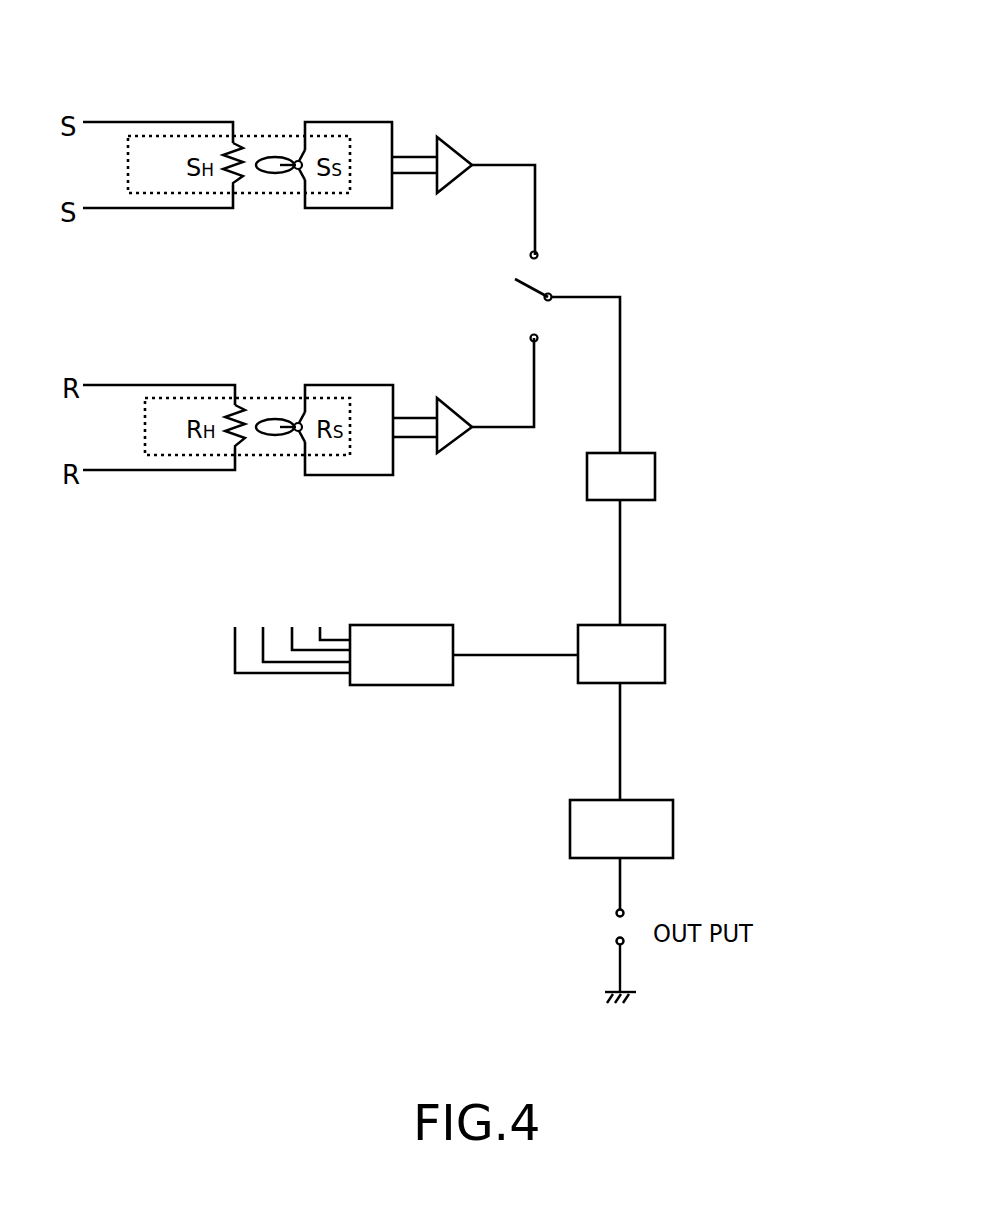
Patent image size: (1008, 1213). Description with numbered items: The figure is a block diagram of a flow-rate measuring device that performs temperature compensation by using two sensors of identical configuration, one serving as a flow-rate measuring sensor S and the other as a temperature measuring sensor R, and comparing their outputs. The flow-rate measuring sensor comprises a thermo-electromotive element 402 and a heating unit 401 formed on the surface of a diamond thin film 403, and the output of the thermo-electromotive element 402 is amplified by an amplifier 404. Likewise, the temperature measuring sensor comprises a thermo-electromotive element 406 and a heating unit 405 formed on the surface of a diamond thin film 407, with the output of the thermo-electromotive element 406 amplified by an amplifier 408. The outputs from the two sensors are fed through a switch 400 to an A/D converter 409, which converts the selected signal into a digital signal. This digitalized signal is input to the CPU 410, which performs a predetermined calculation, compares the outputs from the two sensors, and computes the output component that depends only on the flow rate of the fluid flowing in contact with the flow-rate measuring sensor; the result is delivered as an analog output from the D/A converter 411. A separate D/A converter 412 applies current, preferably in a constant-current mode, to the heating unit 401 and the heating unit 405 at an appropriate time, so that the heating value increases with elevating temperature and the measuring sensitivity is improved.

The switch 400 is at (545, 275).
The heating unit 401 is at (240, 148).
The thermo-electromotive element 402 is at (301, 162).
The diamond thin film 403 is at (262, 183).
The amplifier 404 is at (450, 163).
The heating unit 405 is at (238, 398).
The thermo-electromotive element 406 is at (267, 423).
The diamond thin film 407 is at (277, 445).
The amplifier 408 is at (443, 435).
The A/D converter 409 is at (633, 460).
The CPU 410 is at (632, 635).
The D/A converter 411 is at (628, 810).
The D/A converter 412 is at (392, 677).